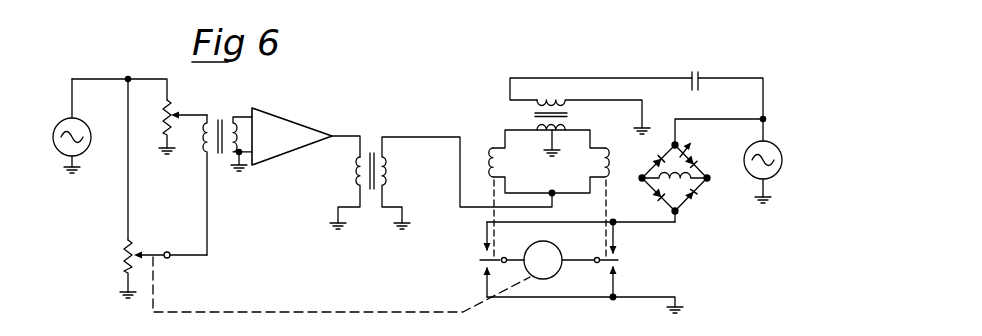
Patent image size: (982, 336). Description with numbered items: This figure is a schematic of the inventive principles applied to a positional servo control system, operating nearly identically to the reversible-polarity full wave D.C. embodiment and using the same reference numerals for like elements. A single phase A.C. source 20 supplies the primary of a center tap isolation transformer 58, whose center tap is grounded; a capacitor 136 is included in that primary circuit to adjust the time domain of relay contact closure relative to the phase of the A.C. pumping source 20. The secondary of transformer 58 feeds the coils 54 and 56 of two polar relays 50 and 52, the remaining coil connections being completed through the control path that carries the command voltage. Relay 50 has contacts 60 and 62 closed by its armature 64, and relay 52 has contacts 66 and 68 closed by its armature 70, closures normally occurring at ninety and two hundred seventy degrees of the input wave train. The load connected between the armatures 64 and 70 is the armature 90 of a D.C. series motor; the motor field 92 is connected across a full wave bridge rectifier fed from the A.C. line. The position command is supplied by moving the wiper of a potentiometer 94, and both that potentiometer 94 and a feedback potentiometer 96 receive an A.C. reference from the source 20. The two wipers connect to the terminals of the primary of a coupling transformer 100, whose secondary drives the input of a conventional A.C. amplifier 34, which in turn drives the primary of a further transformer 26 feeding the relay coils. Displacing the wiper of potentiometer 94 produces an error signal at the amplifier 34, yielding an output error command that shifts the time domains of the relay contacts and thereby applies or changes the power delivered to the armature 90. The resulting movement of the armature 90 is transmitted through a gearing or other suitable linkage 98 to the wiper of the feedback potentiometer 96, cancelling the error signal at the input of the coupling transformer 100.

The single phase A.C. source 20 is at (83, 118).
The transformer 26 is at (373, 149).
The A.C. amplifier 34 is at (287, 113).
The polar relay 50 is at (498, 186).
The polar relay 52 is at (624, 186).
The coil 54 is at (497, 168).
The coil 56 is at (610, 168).
The center tap isolation transformer 58 is at (547, 100).
The relay contact 60 is at (486, 243).
The relay contact 62 is at (486, 274).
The armature 64 is at (481, 258).
The relay contact 66 is at (615, 246).
The relay contact 68 is at (615, 285).
The armature 70 is at (608, 263).
The motor armature 90 is at (543, 279).
The motor field 92 is at (673, 185).
The command potentiometer 94 is at (174, 115).
The feedback potentiometer 96 is at (129, 250).
The linkage 98 is at (282, 311).
The coupling transformer 100 is at (219, 113).
The capacitor 136 is at (700, 72).